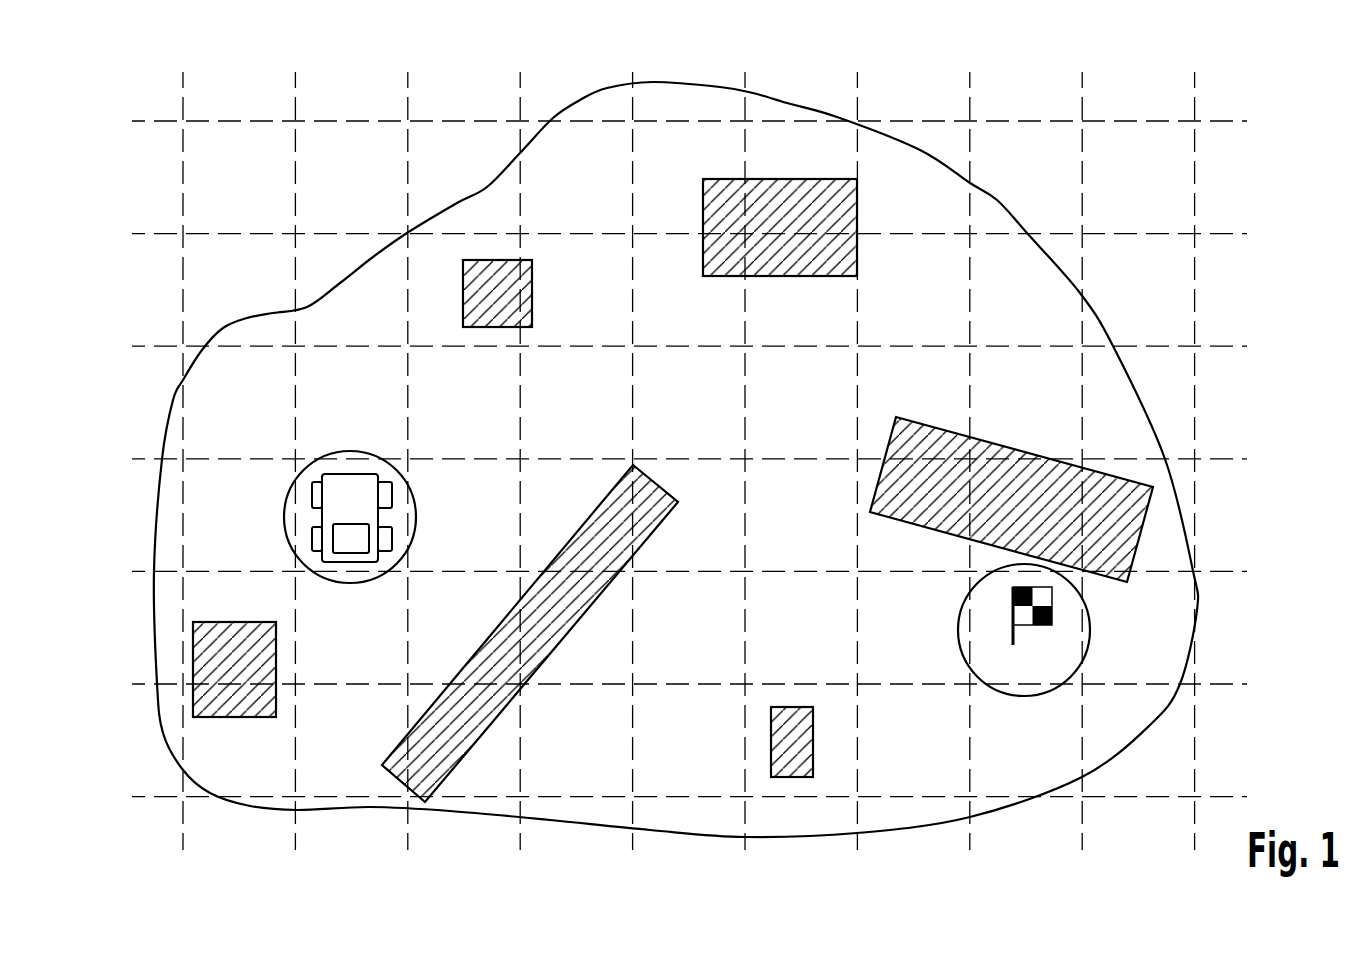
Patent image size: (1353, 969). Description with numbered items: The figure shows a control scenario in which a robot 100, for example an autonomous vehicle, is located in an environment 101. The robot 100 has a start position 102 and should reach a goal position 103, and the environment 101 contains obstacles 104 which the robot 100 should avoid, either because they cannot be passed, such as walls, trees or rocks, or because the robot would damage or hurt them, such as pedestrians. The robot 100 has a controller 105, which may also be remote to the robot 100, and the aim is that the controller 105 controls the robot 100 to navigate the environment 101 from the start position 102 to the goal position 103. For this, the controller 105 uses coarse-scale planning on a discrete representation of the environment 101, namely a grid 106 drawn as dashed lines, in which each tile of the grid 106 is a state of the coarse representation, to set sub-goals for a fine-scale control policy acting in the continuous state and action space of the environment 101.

The robot 100 is at (349, 474).
The environment 101 is at (995, 198).
The start position 102 is at (284, 513).
The goal position 103 is at (957, 628).
The obstacles 104 is at (533, 292).
The controller 105 is at (352, 554).
The grid 106 is at (238, 120).